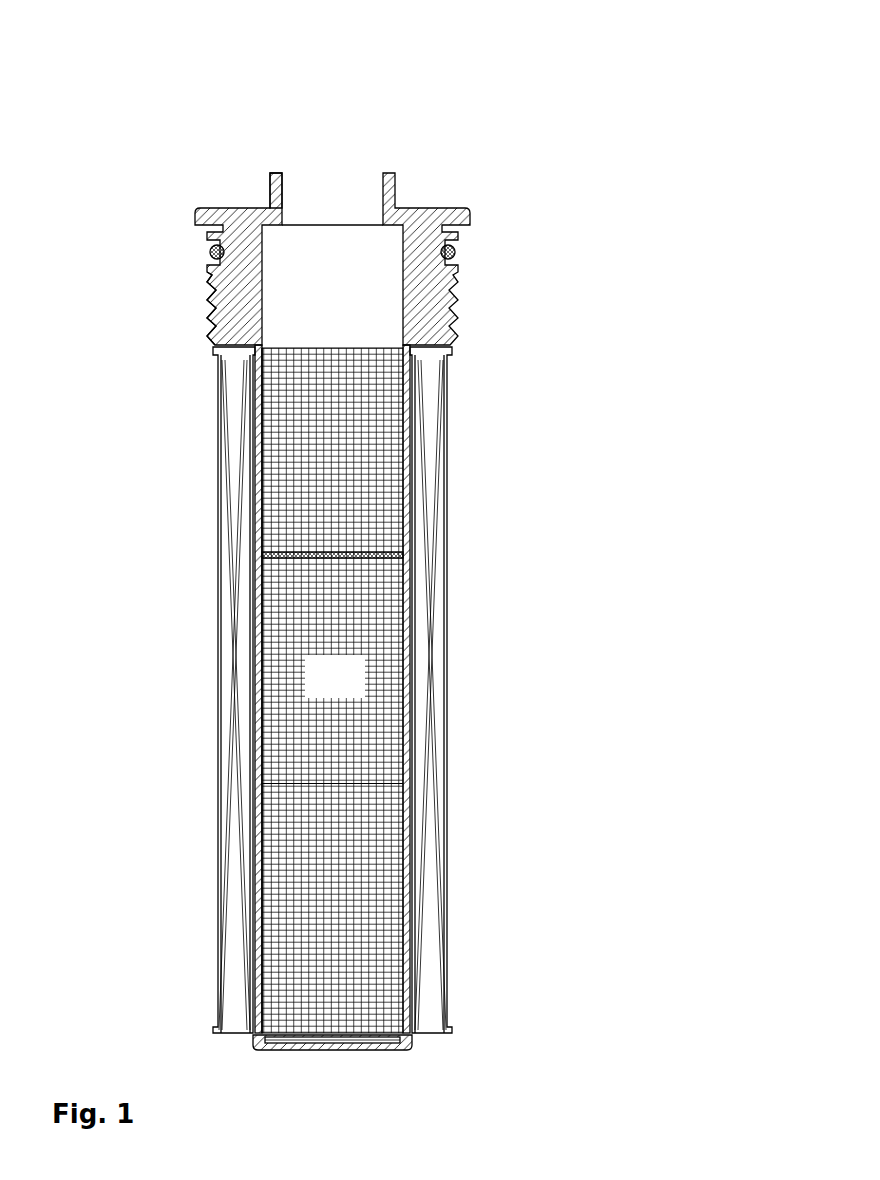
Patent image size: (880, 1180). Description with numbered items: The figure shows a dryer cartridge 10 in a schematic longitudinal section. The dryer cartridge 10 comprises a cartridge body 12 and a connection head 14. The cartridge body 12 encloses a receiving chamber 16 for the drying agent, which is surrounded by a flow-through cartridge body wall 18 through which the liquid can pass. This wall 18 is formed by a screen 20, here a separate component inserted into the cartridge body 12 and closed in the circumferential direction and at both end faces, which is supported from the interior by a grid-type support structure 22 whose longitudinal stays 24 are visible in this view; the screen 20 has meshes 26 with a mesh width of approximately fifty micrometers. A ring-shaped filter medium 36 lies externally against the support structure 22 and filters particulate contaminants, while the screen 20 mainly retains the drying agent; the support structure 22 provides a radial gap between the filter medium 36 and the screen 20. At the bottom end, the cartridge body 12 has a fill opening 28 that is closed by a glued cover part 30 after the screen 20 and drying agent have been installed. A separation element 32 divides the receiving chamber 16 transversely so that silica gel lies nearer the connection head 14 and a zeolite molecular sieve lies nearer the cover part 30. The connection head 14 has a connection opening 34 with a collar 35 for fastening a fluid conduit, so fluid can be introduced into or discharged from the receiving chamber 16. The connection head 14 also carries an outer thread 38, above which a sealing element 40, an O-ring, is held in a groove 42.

The dryer cartridge 10 is at (120, 123).
The cartridge body 12 is at (503, 581).
The connection head 14 is at (453, 187).
The receiving chamber 16 is at (320, 689).
The cartridge body wall 18 is at (452, 668).
The screen 20 is at (280, 650).
The grid-type support structure 22 is at (257, 735).
The longitudinal stays 24 is at (200, 690).
The meshes 26 is at (285, 783).
The fill opening 28 is at (345, 1040).
The cover part 30 is at (290, 1043).
The separation element 32 is at (262, 555).
The connection opening 34 is at (333, 188).
The collar 35 is at (268, 181).
The filter medium 36 is at (230, 466).
The outer thread 38 is at (205, 305).
The sealing element 40 is at (210, 252).
The groove 42 is at (458, 252).